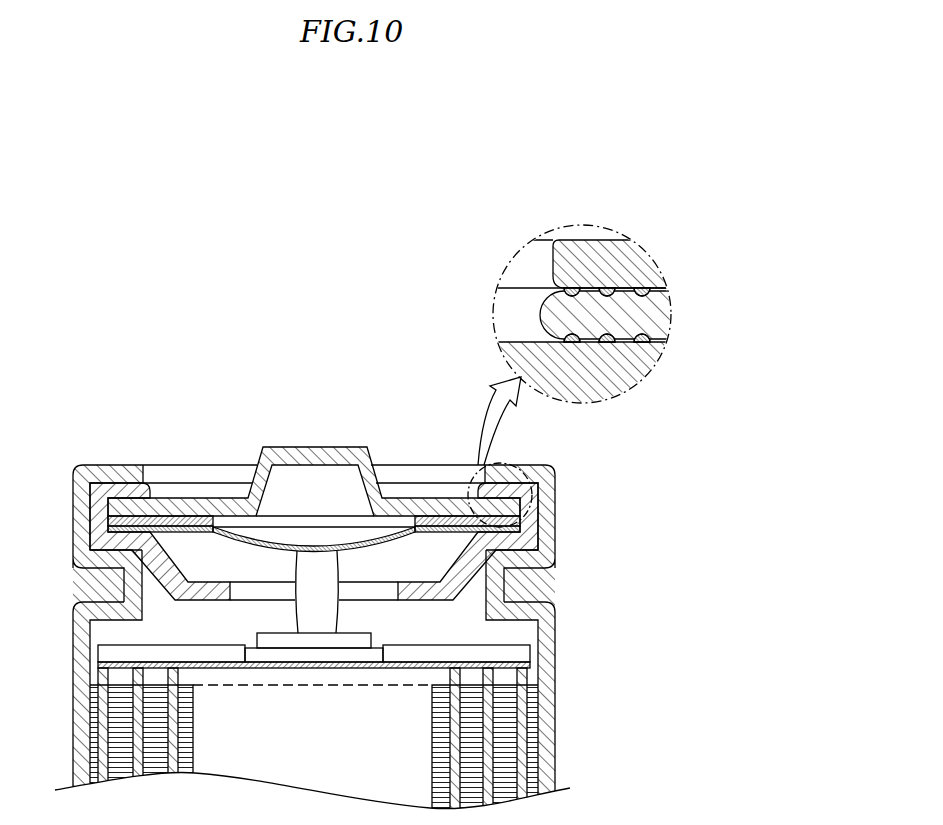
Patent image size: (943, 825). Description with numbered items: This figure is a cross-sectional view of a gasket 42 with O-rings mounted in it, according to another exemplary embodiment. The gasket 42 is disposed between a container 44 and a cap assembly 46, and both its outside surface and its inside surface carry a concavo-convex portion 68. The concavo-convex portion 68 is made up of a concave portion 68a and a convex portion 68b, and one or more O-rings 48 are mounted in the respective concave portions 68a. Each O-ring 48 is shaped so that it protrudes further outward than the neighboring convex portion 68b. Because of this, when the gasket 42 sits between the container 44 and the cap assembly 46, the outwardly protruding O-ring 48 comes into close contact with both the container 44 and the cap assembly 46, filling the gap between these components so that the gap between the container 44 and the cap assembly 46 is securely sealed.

The gasket 42 is at (538, 522).
The container 44 is at (547, 686).
The cap assembly 46 is at (418, 450).
The O-ring 48 is at (609, 298).
The concavo-convex portion 68 is at (589, 221).
The concave portion 68a is at (566, 289).
The convex portion 68b is at (589, 291).